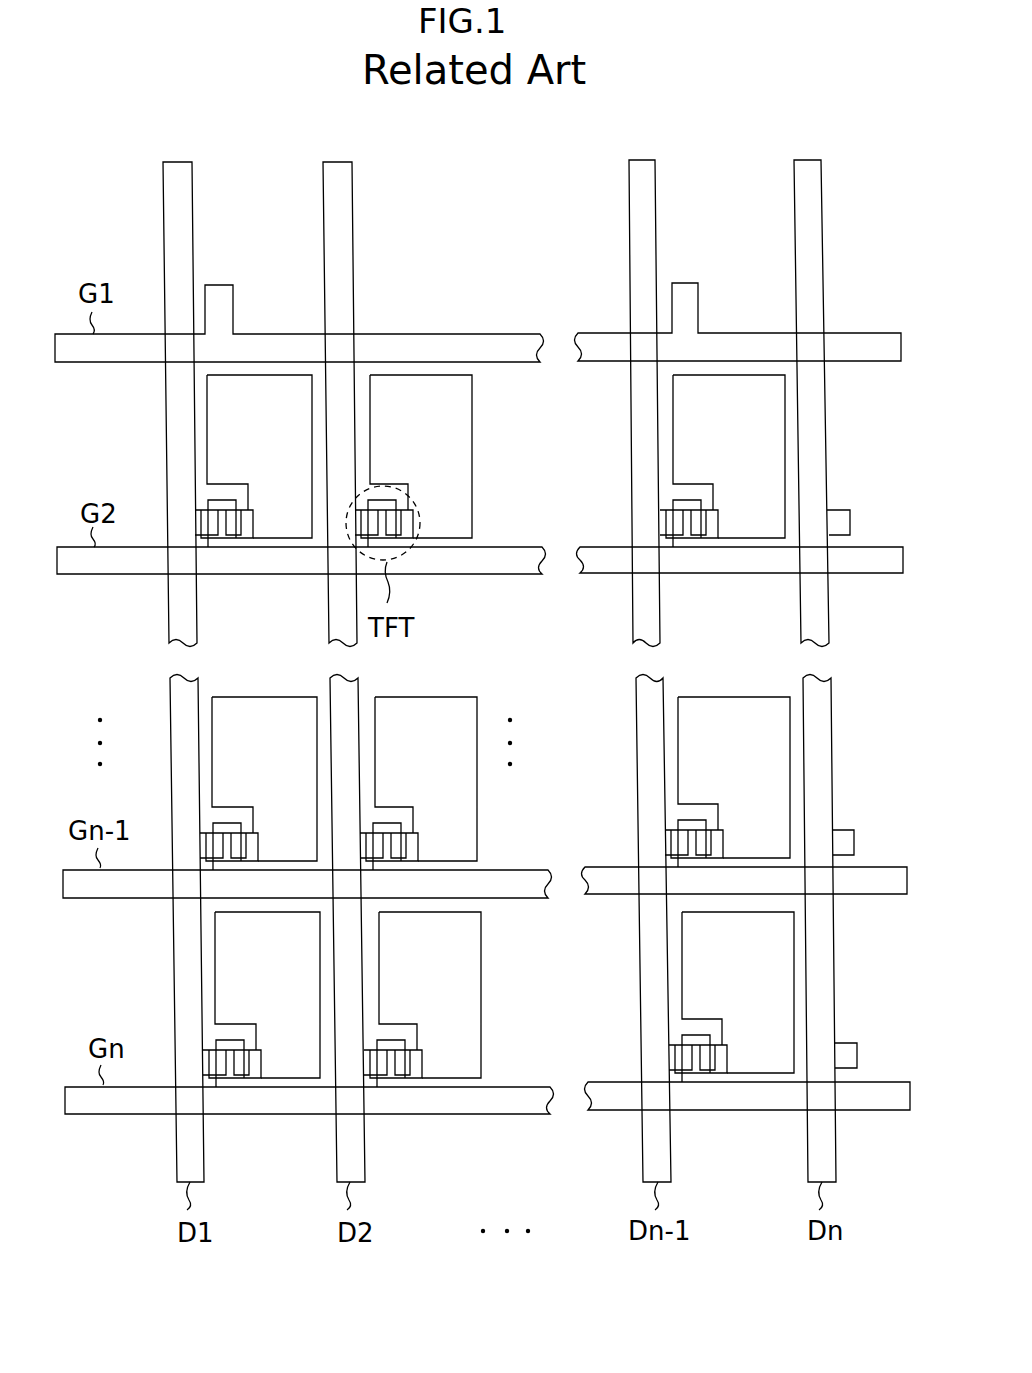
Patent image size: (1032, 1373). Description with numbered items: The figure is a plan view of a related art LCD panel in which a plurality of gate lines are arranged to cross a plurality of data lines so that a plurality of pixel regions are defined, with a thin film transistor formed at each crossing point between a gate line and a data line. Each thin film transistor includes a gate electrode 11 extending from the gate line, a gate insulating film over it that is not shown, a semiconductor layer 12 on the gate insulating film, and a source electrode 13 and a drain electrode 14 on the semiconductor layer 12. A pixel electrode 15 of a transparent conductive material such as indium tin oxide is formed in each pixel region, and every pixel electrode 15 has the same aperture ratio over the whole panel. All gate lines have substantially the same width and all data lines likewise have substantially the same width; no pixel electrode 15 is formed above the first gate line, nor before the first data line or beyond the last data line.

The gate electrode 11 is at (222, 283).
The semiconductor layer 12 is at (382, 497).
The source electrode 13 is at (372, 493).
The drain electrode 14 is at (413, 513).
The pixel electrode 15 is at (467, 440).